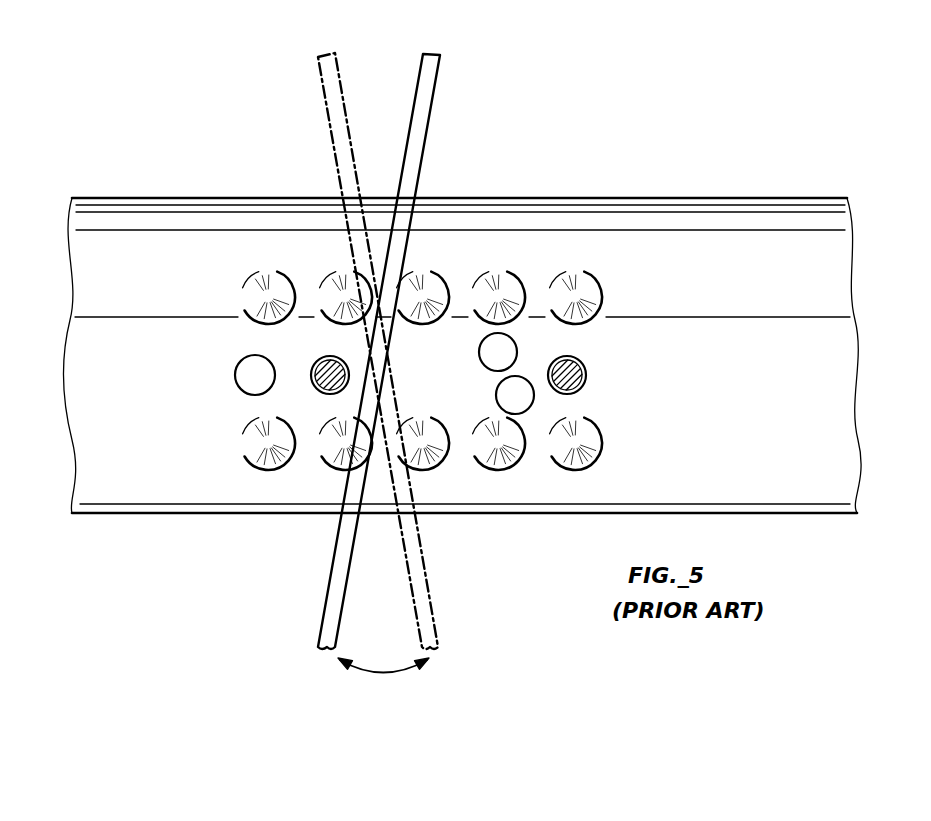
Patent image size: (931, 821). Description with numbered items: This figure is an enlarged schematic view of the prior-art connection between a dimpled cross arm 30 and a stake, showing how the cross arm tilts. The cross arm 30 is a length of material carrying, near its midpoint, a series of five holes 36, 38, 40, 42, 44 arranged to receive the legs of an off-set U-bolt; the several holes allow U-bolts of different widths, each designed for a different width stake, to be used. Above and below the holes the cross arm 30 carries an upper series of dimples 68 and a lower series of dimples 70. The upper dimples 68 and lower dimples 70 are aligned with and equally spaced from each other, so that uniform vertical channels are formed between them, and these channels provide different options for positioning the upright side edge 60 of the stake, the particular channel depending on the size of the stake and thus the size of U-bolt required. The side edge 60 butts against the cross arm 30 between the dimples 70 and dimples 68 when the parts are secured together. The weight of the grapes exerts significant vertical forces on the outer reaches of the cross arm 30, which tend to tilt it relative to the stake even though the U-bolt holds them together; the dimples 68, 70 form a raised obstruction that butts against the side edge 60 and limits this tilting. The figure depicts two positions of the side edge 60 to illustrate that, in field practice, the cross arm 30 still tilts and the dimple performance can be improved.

The dimpled cross arm 30 is at (703, 220).
The hole 36 is at (255, 377).
The hole 38 is at (326, 360).
The hole 40 is at (496, 362).
The hole 42 is at (512, 406).
The hole 44 is at (567, 385).
The upright side edge 60 is at (320, 92).
The upper dimples 68 is at (347, 277).
The lower dimples 70 is at (325, 462).